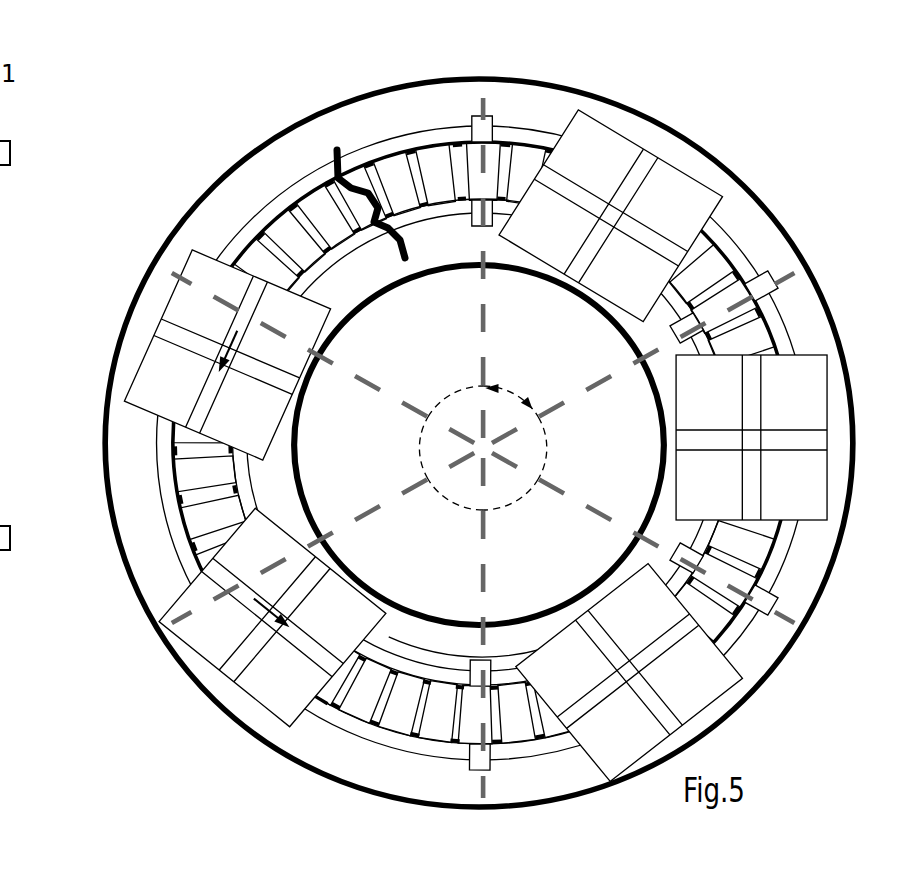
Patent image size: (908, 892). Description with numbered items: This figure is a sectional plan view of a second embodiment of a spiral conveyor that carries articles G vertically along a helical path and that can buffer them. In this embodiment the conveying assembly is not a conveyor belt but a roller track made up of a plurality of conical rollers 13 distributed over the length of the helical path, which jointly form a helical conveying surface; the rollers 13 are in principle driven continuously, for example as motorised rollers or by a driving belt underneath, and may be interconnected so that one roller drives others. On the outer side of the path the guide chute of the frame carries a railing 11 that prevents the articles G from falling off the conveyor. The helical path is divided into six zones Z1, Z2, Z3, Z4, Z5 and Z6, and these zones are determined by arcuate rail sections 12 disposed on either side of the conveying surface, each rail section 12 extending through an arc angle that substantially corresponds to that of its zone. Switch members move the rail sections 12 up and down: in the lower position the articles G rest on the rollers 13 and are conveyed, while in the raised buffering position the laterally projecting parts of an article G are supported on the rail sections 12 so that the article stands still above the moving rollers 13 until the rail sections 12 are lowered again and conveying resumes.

The railing 11 is at (782, 229).
The rail sections 12 is at (712, 253).
The conical rollers 13 is at (434, 723).
The articles G is at (213, 295).
The zone Z1 is at (513, 389).
The zone Z2 is at (563, 448).
The zone Z3 is at (515, 510).
The zone Z4 is at (455, 510).
The zone Z5 is at (409, 448).
The zone Z6 is at (463, 389).